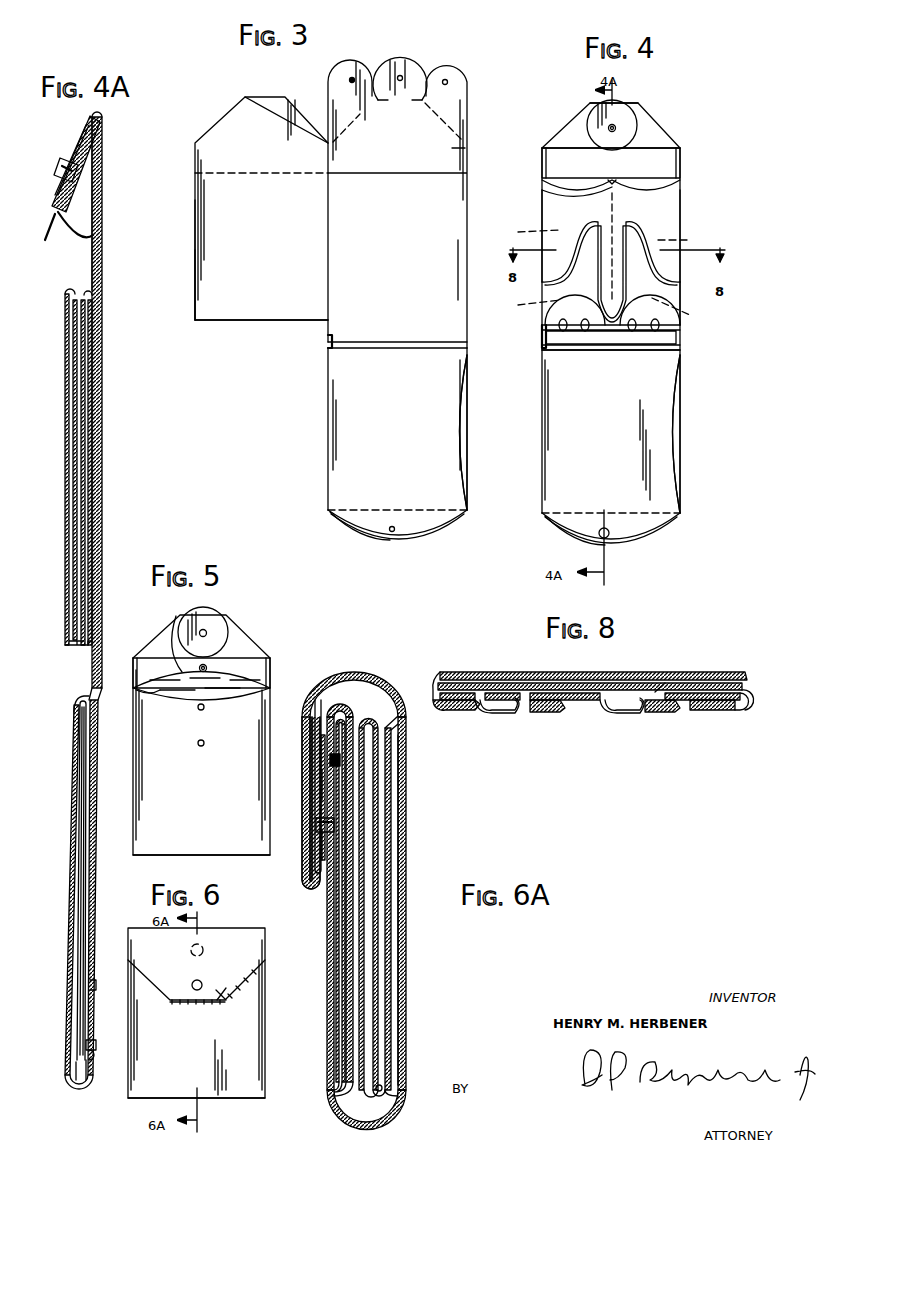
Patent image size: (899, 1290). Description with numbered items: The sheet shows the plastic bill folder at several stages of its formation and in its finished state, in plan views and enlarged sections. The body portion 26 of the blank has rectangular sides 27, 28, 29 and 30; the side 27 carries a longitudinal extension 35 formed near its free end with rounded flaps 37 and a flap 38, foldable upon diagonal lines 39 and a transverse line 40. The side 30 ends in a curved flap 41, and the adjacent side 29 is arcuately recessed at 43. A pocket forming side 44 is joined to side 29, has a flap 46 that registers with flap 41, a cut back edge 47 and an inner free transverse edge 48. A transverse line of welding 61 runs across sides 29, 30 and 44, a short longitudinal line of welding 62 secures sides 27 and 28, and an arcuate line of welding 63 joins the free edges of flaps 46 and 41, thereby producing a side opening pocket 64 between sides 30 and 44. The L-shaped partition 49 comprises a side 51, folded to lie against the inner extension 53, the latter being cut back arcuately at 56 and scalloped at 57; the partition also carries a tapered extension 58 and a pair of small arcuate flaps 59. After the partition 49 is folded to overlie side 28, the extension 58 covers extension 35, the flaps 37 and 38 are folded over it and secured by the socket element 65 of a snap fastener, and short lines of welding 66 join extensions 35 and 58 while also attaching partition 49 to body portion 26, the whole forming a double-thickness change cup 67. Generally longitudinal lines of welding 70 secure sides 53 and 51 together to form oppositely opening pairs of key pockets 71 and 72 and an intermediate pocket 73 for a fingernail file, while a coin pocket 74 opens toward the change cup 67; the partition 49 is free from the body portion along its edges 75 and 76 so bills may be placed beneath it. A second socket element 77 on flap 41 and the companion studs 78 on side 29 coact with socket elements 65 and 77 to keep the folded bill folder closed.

In FIG. 3, the body portion 26 is at (340, 357).
In FIG. 4, the body portion 26 is at (652, 390).
In FIG. 4A, the body portion 26 is at (96, 512).
In FIG. 5, the body portion 26 is at (232, 845).
In FIG. 6, the body portion 26 is at (240, 1082).
In FIG. 6A, the body portion 26 is at (400, 983).
In FIG. 8, the body portion 26 is at (628, 672).
In FIG. 4A, the body portion side 27 is at (102, 412).
In FIG. 6A, the body portion side 27 is at (400, 800).
In FIG. 8, the body portion side 27 is at (530, 675).
In FIG. 3, the body portion side 28 is at (380, 250).
In FIG. 4A, the body portion side 28 is at (98, 433).
In FIG. 6A, the body portion side 28 is at (399, 842).
In FIG. 8, the body portion side 28 is at (574, 680).
In FIG. 4A, the body portion side 29 is at (93, 872).
In FIG. 5, the body portion side 29 is at (182, 800).
In FIG. 6, the body portion side 29 is at (180, 1065).
In FIG. 6A, the body portion side 29 is at (328, 953).
In FIG. 3, the body portion side 30 is at (462, 422).
In FIG. 4, the body portion side 30 is at (672, 430).
In FIG. 4A, the body portion side 30 is at (80, 846).
In FIG. 6A, the body portion side 30 is at (338, 972).
In FIG. 3, the longitudinal extension 35 is at (432, 150).
In FIG. 4A, the longitudinal extension 35 is at (103, 175).
In FIG. 6A, the longitudinal extension 35 is at (306, 738).
In FIG. 3, the rounded flaps 37 is at (355, 64).
In FIG. 4, the rounded flaps 37 is at (572, 133).
In FIG. 4A, the rounded flaps 37 is at (67, 230).
In FIG. 5, the rounded flaps 37 is at (165, 632).
In FIG. 6, the rounded flaps 37 is at (225, 940).
In FIG. 6A, the rounded flaps 37 is at (310, 862).
In FIG. 3, the rounded flap 38 is at (404, 60).
In FIG. 4, the rounded flap 38 is at (630, 112).
In FIG. 4A, the rounded flap 38 is at (80, 142).
In FIG. 5, the rounded flap 38 is at (200, 612).
In FIG. 6A, the rounded flap 38 is at (322, 800).
In FIG. 3, the diagonal lines 39 is at (358, 118).
In FIG. 3, the transverse line 40 is at (410, 101).
In FIG. 4A, the curved transverse flap 41 is at (92, 1096).
In FIG. 5, the curved transverse flap 41 is at (180, 670).
In FIG. 6A, the curved transverse flap 41 is at (312, 700).
In FIG. 4A, the arcuate recess 43 is at (70, 1088).
In FIG. 5, the arcuate recess 43 is at (170, 700).
In FIG. 3, the pocket forming side 44 is at (380, 433).
In FIG. 4, the pocket forming side 44 is at (590, 446).
In FIG. 4A, the pocket forming side 44 is at (72, 895).
In FIG. 6A, the pocket forming side 44 is at (346, 1000).
In FIG. 3, the flap 46 is at (417, 520).
In FIG. 4, the flap 46 is at (630, 526).
In FIG. 4A, the flap 46 is at (95, 1072).
In FIG. 6A, the flap 46 is at (316, 742).
In FIG. 3, the cut back edge 47 is at (466, 438).
In FIG. 4, the cut back edge 47 is at (672, 440).
In FIG. 3, the inner free transverse edge 48 is at (393, 340).
In FIG. 4A, the inner free transverse edge 48 is at (88, 680).
In FIG. 3, the L-shaped partition portion 49 is at (192, 258).
In FIG. 4, the L-shaped partition portion 49 is at (668, 302).
In FIG. 4A, the L-shaped partition portion 49 is at (66, 568).
In FIG. 6A, the L-shaped partition portion 49 is at (388, 1030).
In FIG. 8, the L-shaped partition portion 49 is at (690, 712).
In FIG. 4, the side 51 is at (612, 190).
In FIG. 4A, the side 51 is at (78, 452).
In FIG. 6A, the side 51 is at (372, 1047).
In FIG. 8, the side 51 is at (502, 712).
In FIG. 4, the inner extension 53 is at (695, 236).
In FIG. 4A, the inner extension 53 is at (66, 470).
In FIG. 6A, the inner extension 53 is at (360, 1022).
In FIG. 8, the inner extension 53 is at (462, 712).
In FIG. 4, the arcuate cut back 56 is at (562, 193).
In FIG. 4A, the arcuate cut back 56 is at (68, 308).
In FIG. 4, the scalloped end 57 is at (611, 334).
In FIG. 3, the tapered extension 58 is at (232, 113).
In FIG. 4, the tapered extension 58 is at (664, 165).
In FIG. 4A, the tapered extension 58 is at (101, 200).
In FIG. 5, the tapered extension 58 is at (255, 668).
In FIG. 6A, the tapered extension 58 is at (314, 772).
In FIG. 4, the small arcuate flaps 59 is at (630, 180).
In FIG. 4A, the small arcuate flaps 59 is at (66, 294).
In FIG. 6A, the small arcuate flaps 59 is at (368, 727).
In FIG. 3, the transverse line of welding 61 is at (428, 349).
In FIG. 4, the transverse line of welding 61 is at (624, 352).
In FIG. 4A, the transverse line of welding 61 is at (82, 690).
In FIG. 6A, the transverse line of welding 61 is at (329, 1101).
In FIG. 3, the longitudinal line of welding 62 is at (324, 335).
In FIG. 4, the longitudinal line of welding 62 is at (540, 335).
In FIG. 3, the arcuate line of welding 63 is at (362, 530).
In FIG. 4, the arcuate line of welding 63 is at (568, 537).
In FIG. 4A, the arcuate line of welding 63 is at (91, 1025).
In FIG. 4, the side opening pocket 64 is at (672, 466).
In FIG. 4A, the side opening pocket 64 is at (70, 930).
In FIG. 6A, the side opening pocket 64 is at (345, 930).
In FIG. 4, the socket element 65 is at (616, 127).
In FIG. 4A, the socket element 65 is at (62, 168).
In FIG. 5, the socket element 65 is at (207, 632).
In FIG. 6, the socket element 65 is at (190, 951).
In FIG. 6A, the socket element 65 is at (320, 824).
In FIG. 4, the lines of welding 66 is at (544, 160).
In FIG. 5, the lines of welding 66 is at (134, 666).
In FIG. 4, the change cup 67 is at (580, 110).
In FIG. 4A, the change cup 67 is at (96, 150).
In FIG. 5, the change cup 67 is at (245, 634).
In FIG. 6, the change cup 67 is at (213, 1000).
In FIG. 6A, the change cup 67 is at (311, 884).
In FIG. 4, the lines of welding 70 is at (612, 270).
In FIG. 4A, the lines of welding 70 is at (70, 642).
In FIG. 6A, the lines of welding 70 is at (380, 1088).
In FIG. 8, the lines of welding 70 is at (522, 700).
In FIG. 4, the key pockets 71 is at (603, 235).
In FIG. 8, the key pockets 71 is at (480, 712).
In FIG. 4, the key pockets 72 is at (603, 313).
In FIG. 8, the key pockets 72 is at (546, 712).
In FIG. 4, the intermediate pocket 73 is at (614, 245).
In FIG. 4A, the intermediate pocket 73 is at (70, 513).
In FIG. 6A, the intermediate pocket 73 is at (366, 1004).
In FIG. 8, the intermediate pocket 73 is at (573, 715).
In FIG. 4, the coin pocket 74 is at (570, 170).
In FIG. 4A, the coin pocket 74 is at (78, 415).
In FIG. 6A, the coin pocket 74 is at (387, 726).
In FIG. 8, the coin pocket 74 is at (660, 690).
In FIG. 3, the edge 75 is at (238, 322).
In FIG. 4, the edge 75 is at (590, 340).
In FIG. 3, the edge 76 is at (193, 240).
In FIG. 8, the edge 76 is at (748, 703).
In FIG. 4A, the socket element 77 is at (97, 1047).
In FIG. 5, the socket element 77 is at (178, 645).
In FIG. 6, the socket element 77 is at (202, 982).
In FIG. 6A, the socket element 77 is at (330, 758).
In FIG. 4A, the snap fastener studs 78 is at (95, 984).
In FIG. 5, the snap fastener studs 78 is at (204, 710).
In FIG. 6A, the snap fastener studs 78 is at (340, 758).